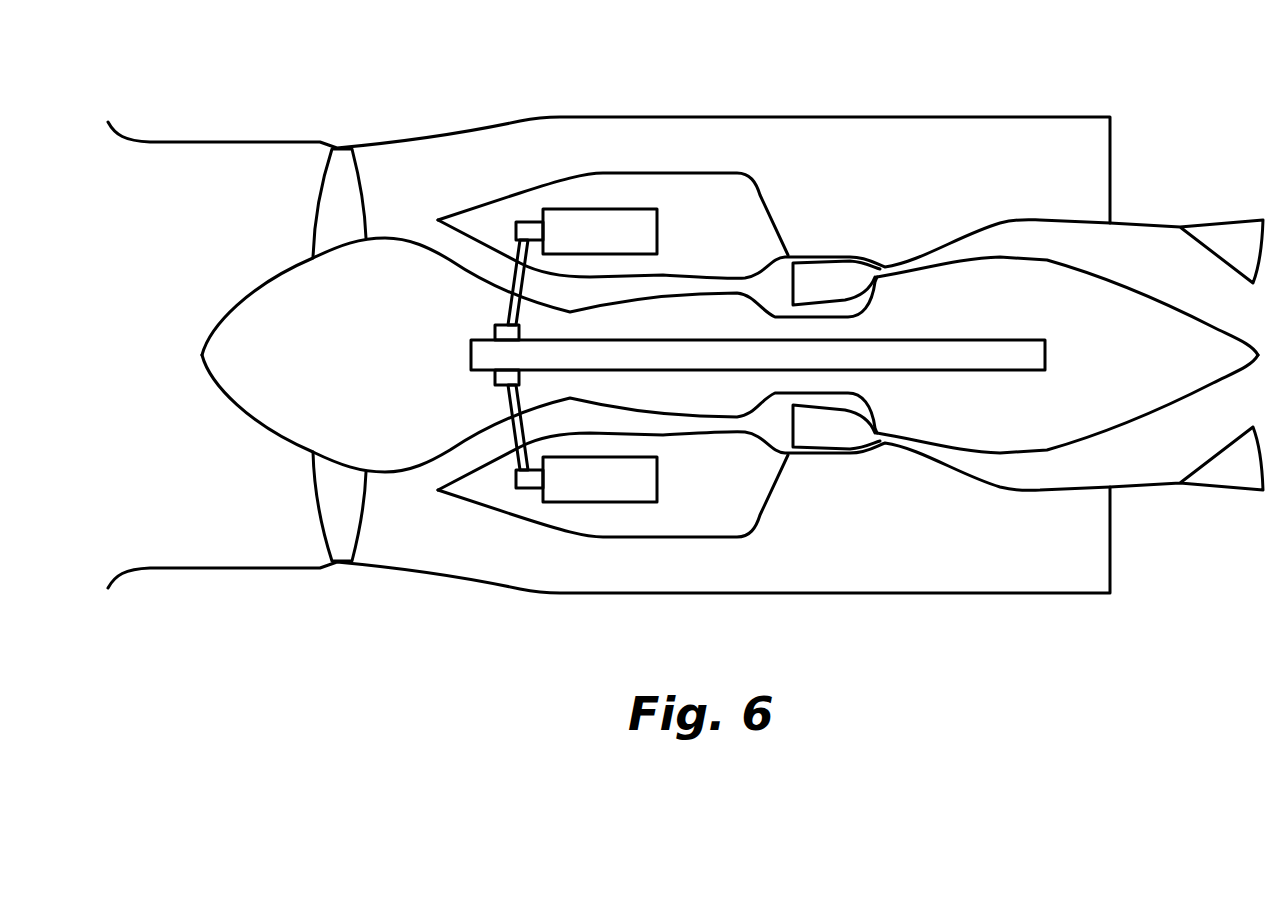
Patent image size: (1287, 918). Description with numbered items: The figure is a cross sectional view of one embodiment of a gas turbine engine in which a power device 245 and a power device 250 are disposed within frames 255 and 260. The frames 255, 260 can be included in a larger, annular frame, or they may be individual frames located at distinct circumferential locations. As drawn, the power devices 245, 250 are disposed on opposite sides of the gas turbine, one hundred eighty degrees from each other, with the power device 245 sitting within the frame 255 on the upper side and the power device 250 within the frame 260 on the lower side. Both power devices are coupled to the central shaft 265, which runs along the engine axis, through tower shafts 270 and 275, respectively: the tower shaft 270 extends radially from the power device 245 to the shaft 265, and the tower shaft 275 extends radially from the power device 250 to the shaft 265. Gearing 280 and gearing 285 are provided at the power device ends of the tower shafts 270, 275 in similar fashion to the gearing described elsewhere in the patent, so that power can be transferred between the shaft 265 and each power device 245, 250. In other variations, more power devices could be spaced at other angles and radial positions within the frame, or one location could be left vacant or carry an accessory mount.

The power device 245 is at (600, 209).
The power device 250 is at (598, 503).
The frame 255 is at (707, 173).
The frame 260 is at (703, 537).
The shaft 265 is at (970, 340).
The tower shaft 270 is at (509, 277).
The tower shaft 275 is at (509, 433).
The gearing 280 is at (527, 222).
The gearing 285 is at (523, 490).